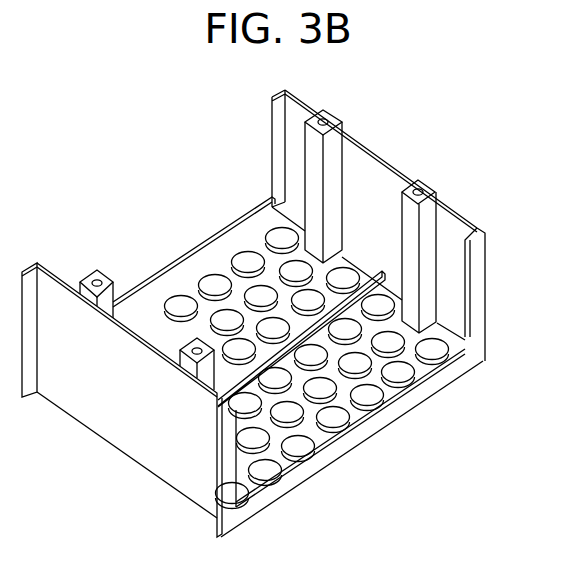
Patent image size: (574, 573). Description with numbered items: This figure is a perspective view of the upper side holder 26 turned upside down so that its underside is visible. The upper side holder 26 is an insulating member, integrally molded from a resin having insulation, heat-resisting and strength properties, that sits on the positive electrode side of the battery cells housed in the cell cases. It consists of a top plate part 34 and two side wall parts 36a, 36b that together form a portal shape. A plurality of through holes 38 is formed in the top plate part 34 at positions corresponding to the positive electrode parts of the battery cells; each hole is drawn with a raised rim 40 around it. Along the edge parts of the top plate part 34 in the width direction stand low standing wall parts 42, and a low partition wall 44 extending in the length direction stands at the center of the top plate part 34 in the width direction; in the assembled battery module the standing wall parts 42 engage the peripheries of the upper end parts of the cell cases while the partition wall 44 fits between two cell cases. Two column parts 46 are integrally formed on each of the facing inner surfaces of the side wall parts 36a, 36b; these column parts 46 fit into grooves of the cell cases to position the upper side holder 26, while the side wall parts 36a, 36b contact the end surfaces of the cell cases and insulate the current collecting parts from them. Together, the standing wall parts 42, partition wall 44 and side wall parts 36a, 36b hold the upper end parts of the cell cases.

The upper side holder 26 is at (397, 162).
The top plate part 34 is at (240, 252).
The side wall part 36a is at (90, 385).
The side wall part 36b is at (446, 205).
The through holes 38 is at (279, 233).
The hole collars 40 is at (181, 298).
The low standing wall parts 42 is at (133, 291).
The low partition wall 44 is at (358, 290).
The column parts 46 is at (322, 110).